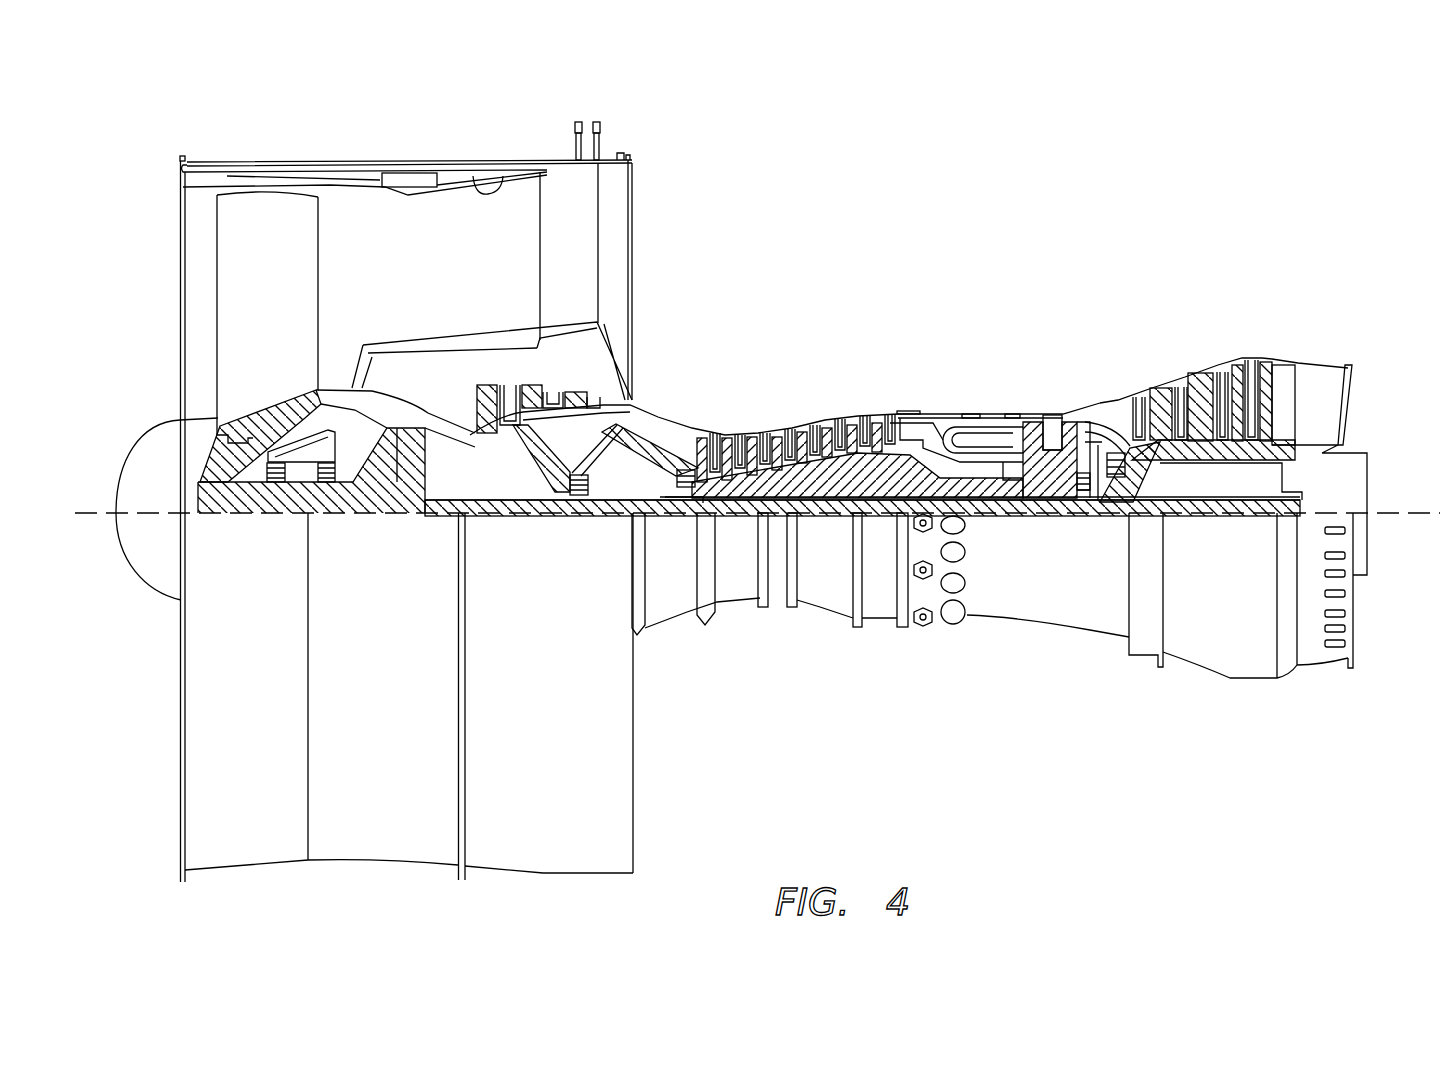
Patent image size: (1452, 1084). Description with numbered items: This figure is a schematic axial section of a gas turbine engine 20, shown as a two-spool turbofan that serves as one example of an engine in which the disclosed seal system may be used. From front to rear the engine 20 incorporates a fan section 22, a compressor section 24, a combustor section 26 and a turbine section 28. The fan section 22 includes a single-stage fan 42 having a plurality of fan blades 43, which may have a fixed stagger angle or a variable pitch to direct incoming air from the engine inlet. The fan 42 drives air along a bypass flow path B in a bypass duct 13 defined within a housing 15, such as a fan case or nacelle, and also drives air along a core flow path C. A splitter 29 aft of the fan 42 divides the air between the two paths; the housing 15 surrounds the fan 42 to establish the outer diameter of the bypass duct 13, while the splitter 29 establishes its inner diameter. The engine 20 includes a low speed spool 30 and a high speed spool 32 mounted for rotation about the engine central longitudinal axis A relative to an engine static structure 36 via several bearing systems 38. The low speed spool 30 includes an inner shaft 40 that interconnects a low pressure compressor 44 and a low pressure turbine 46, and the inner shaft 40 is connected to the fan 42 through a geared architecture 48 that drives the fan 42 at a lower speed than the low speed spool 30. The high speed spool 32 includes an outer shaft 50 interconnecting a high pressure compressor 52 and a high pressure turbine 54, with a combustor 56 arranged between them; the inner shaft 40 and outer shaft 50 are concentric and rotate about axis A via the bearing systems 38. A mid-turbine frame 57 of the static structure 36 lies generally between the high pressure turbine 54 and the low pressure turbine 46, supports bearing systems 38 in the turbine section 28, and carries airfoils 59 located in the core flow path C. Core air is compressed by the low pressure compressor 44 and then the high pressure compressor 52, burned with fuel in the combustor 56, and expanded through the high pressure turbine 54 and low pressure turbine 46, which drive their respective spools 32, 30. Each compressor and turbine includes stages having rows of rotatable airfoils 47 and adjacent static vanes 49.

The bypass duct 13 is at (490, 196).
The housing 15 is at (410, 172).
The gas turbine engine 20 is at (1024, 262).
The fan section 22 is at (332, 158).
The compressor section 24 is at (681, 413).
The combustor section 26 is at (955, 393).
The turbine section 28 is at (1158, 340).
The splitter 29 is at (368, 343).
The low speed spool 30 is at (834, 525).
The high speed spool 32 is at (885, 470).
The engine static structure 36 is at (880, 632).
The bearing systems 38 is at (580, 494).
The inner shaft 40 is at (650, 512).
The fan 42 is at (277, 302).
The fan blades 43 is at (305, 316).
The low pressure compressor 44 is at (540, 404).
The low pressure turbine 46 is at (1207, 378).
The rotatable airfoils 47 is at (485, 393).
The geared architecture 48 is at (410, 492).
The static vanes 49 is at (507, 390).
The outer shaft 50 is at (990, 496).
The high pressure compressor 52 is at (800, 435).
The high pressure turbine 54 is at (1050, 410).
The combustor 56 is at (975, 440).
The mid-turbine frame 57 is at (1108, 402).
The airfoils 59 is at (1100, 430).